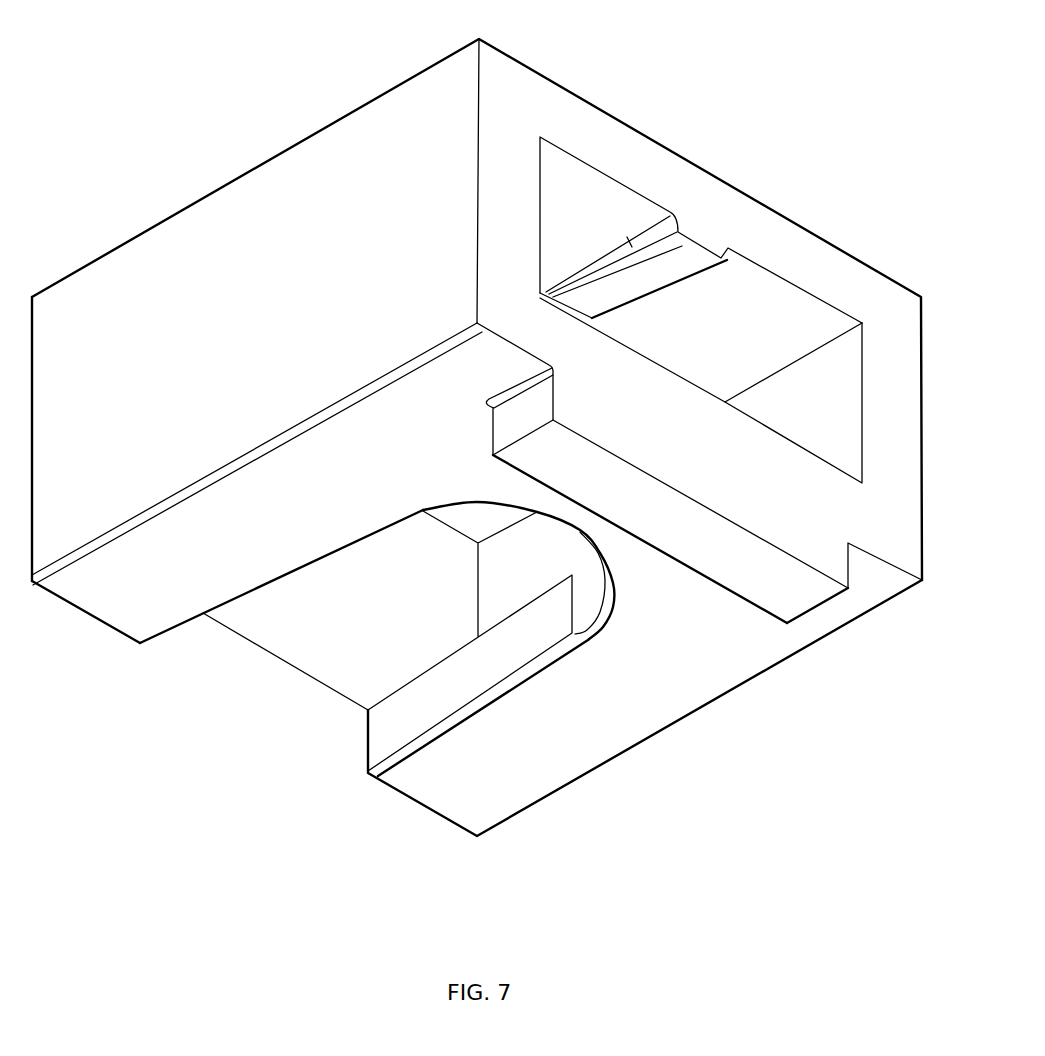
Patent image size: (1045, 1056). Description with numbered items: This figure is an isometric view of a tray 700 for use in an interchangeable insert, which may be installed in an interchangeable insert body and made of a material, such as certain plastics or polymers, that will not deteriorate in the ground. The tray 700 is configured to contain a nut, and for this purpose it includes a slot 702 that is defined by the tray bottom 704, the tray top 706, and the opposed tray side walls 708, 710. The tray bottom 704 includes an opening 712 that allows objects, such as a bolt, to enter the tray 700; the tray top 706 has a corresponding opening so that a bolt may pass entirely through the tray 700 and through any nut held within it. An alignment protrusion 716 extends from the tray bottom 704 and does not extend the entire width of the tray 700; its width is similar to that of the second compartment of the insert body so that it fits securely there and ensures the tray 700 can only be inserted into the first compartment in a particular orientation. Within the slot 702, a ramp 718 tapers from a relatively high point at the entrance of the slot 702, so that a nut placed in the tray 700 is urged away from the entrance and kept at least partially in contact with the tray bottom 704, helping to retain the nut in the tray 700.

The tray 700 is at (146, 70).
The slot 702 is at (764, 318).
The tray bottom 704 is at (693, 660).
The tray top 706 is at (595, 208).
The tray side wall 708 is at (345, 173).
The tray side wall 710 is at (838, 368).
The opening 712 is at (392, 603).
The alignment protrusion 716 is at (795, 588).
The ramp 718 is at (680, 255).